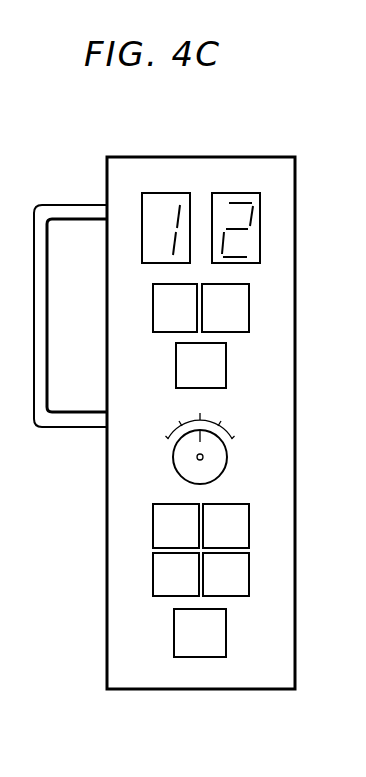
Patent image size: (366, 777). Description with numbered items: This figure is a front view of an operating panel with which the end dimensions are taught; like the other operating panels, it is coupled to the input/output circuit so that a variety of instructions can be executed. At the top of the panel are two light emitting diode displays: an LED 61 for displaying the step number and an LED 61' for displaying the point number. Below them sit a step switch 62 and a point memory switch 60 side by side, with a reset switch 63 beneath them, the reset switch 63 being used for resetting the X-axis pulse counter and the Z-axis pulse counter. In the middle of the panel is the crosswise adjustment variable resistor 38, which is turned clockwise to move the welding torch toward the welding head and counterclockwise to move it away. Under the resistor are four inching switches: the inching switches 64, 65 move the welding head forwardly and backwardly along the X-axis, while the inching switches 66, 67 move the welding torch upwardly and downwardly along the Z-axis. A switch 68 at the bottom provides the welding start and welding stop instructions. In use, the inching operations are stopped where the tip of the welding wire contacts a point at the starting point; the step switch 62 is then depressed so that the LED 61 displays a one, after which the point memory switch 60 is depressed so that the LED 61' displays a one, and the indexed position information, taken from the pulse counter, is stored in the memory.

The LED 61 is at (160, 193).
The LED 61′ is at (260, 238).
The step switch 62 is at (153, 315).
The point memory switch 60 is at (249, 313).
The reset switch 63 is at (226, 368).
The crosswise adjustment variable resistor 38 is at (227, 461).
The inching switch 64 is at (153, 530).
The inching switch 65 is at (249, 520).
The inching switch 66 is at (153, 583).
The inching switch 67 is at (249, 572).
The switch 68 is at (205, 657).